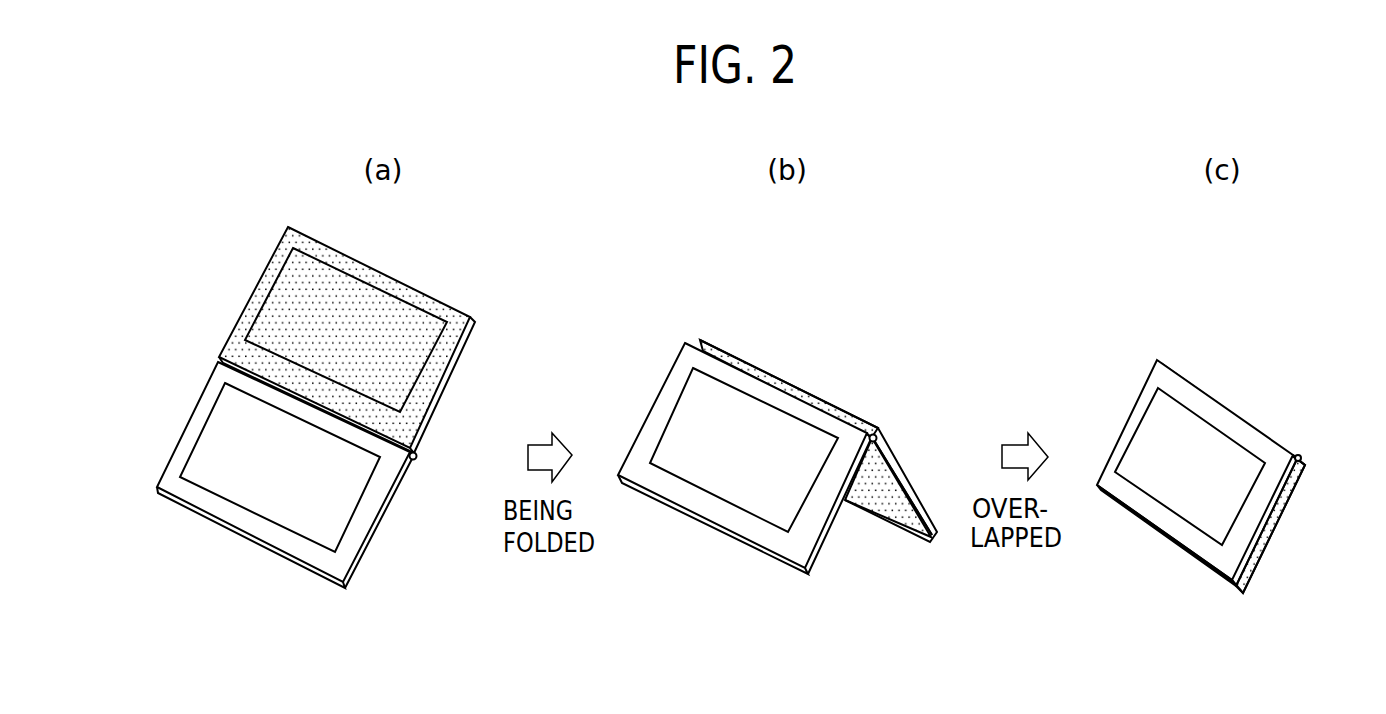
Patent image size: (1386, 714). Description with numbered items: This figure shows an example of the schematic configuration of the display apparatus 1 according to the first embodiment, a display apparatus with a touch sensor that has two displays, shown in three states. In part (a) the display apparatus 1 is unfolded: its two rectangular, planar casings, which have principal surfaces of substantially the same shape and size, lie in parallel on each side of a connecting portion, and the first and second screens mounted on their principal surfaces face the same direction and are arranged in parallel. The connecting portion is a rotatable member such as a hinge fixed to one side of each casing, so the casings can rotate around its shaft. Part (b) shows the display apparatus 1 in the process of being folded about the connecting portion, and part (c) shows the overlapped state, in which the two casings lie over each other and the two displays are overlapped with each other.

The display apparatus 1 is at (258, 206).